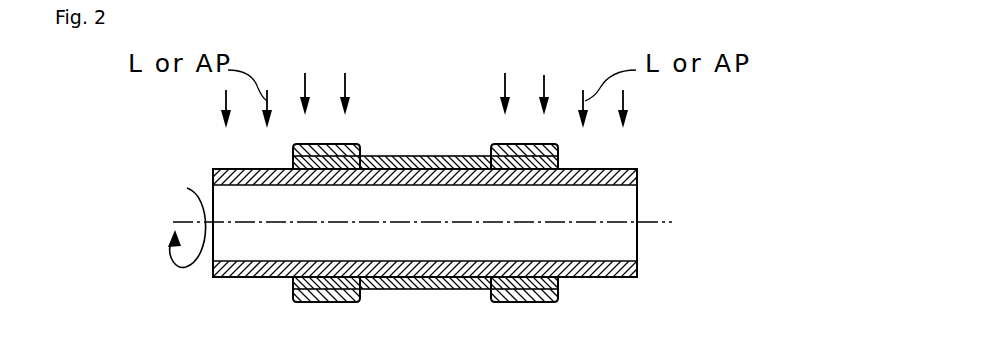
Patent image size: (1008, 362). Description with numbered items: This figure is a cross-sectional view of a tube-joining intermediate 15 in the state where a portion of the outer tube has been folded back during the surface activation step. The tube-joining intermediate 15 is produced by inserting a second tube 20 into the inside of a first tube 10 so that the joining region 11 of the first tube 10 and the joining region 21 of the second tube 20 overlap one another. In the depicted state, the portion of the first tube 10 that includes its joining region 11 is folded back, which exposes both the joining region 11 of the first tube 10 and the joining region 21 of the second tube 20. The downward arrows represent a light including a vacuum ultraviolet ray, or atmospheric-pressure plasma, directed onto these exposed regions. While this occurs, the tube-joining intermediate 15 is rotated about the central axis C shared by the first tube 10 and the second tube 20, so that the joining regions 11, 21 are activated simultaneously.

The tube-joining intermediate 15 is at (192, 165).
The second tube 20 is at (641, 175).
The joining region of the second tube 21 is at (240, 168).
The first tube 10 is at (412, 157).
The joining region of the first tube 11 is at (343, 144).
The central axis C is at (655, 223).